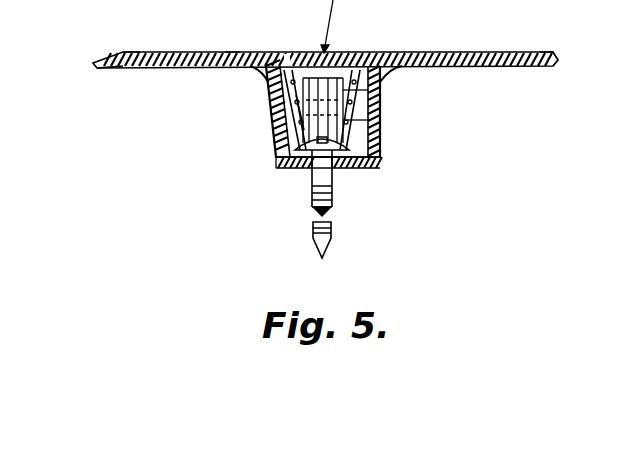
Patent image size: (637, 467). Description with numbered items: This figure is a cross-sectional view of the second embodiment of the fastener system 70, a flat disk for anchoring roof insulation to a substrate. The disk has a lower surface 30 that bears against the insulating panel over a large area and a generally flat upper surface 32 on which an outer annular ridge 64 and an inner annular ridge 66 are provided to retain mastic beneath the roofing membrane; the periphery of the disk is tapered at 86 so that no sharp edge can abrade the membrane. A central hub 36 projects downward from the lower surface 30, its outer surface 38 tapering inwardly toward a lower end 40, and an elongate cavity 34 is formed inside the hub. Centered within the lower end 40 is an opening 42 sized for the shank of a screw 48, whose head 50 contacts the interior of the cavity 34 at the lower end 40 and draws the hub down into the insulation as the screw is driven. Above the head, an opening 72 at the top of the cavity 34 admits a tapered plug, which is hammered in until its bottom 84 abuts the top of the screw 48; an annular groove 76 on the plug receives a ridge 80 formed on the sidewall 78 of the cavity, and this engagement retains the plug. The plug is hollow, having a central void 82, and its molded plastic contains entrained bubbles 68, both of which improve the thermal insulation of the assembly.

The lower surface 30 is at (243, 70).
The upper surface 32 is at (180, 53).
The elongate cavity 34 is at (270, 108).
The central hub 36 is at (270, 158).
The outer surface of hub 38 is at (274, 135).
The lower end 40 is at (296, 168).
The opening 42 is at (342, 170).
The screw 48 is at (333, 230).
The head of screw 50 is at (374, 156).
The outer annular ridge 64 is at (128, 53).
The inner annular ridge 66 is at (232, 53).
The bubbles 68 is at (336, 76).
The fastener system 70 is at (113, 77).
The opening 72 is at (287, 48).
The annular groove 76 is at (380, 95).
The sidewall 78 is at (362, 62).
The ridge 80 is at (382, 108).
The central void 82 is at (280, 168).
The bottom of plug 84 is at (362, 120).
The tapered periphery 86 is at (545, 60).